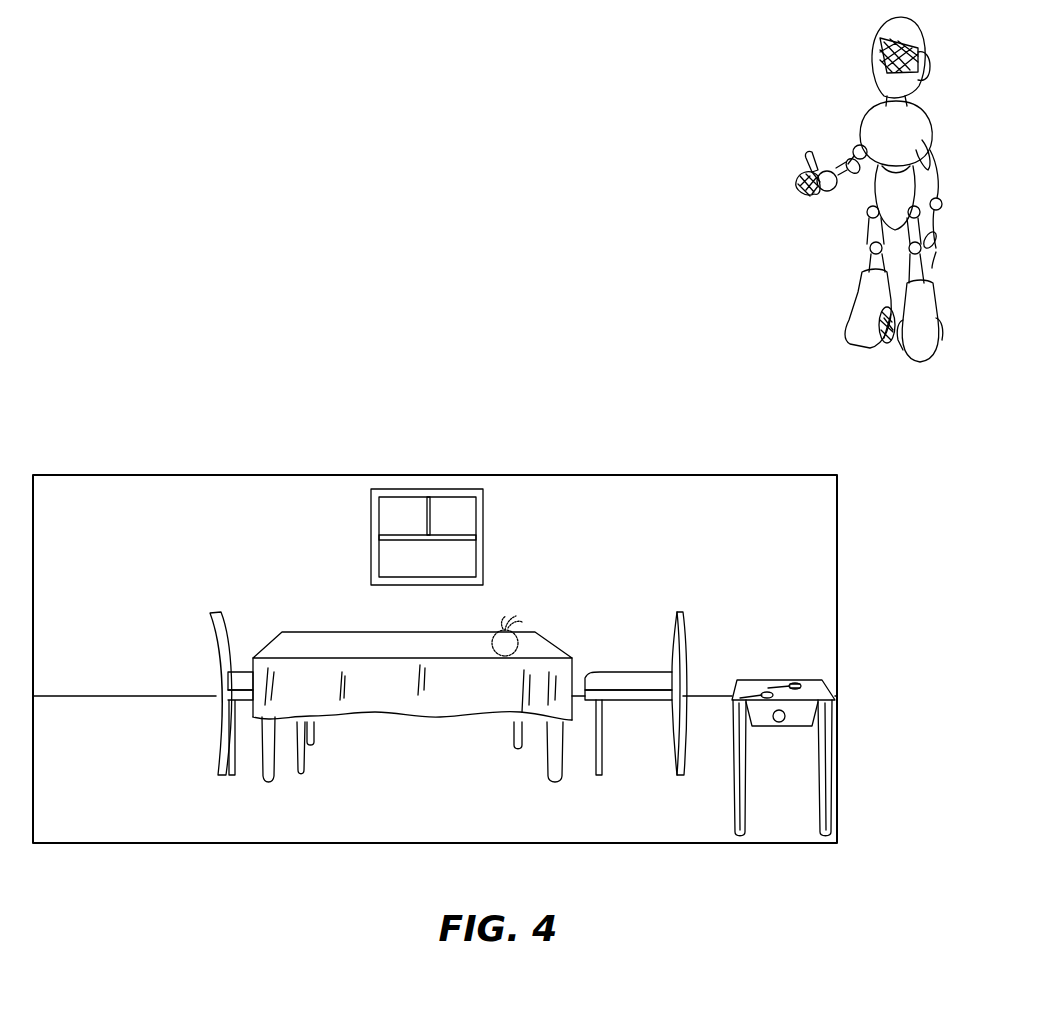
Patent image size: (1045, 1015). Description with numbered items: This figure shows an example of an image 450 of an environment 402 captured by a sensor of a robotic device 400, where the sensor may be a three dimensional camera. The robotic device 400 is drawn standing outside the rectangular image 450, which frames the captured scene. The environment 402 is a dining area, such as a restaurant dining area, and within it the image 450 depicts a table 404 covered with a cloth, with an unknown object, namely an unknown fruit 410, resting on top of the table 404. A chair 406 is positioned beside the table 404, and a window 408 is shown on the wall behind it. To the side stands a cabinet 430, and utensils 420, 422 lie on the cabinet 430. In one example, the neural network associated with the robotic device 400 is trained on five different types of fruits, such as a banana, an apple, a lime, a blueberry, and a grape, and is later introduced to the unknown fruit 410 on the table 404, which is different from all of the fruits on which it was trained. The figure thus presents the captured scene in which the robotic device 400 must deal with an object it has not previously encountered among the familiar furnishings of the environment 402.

The robotic device 400 is at (875, 137).
The environment 402 is at (577, 478).
The table 404 is at (378, 703).
The chair 406 is at (677, 618).
The window 408 is at (482, 528).
The unknown fruit 410 is at (515, 630).
The utensil 420 is at (742, 694).
The utensil 422 is at (784, 683).
The cabinet 430 is at (779, 723).
The image 450 is at (236, 414).